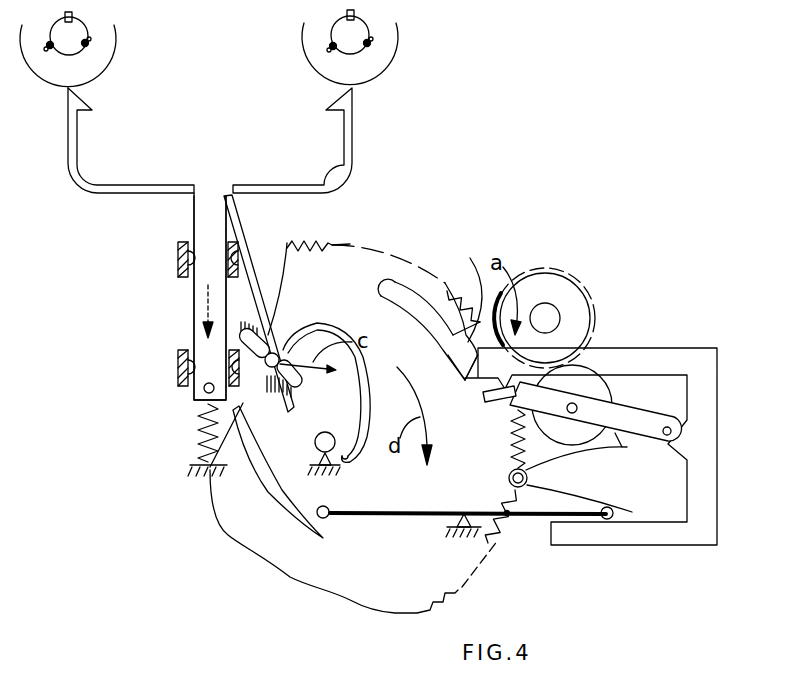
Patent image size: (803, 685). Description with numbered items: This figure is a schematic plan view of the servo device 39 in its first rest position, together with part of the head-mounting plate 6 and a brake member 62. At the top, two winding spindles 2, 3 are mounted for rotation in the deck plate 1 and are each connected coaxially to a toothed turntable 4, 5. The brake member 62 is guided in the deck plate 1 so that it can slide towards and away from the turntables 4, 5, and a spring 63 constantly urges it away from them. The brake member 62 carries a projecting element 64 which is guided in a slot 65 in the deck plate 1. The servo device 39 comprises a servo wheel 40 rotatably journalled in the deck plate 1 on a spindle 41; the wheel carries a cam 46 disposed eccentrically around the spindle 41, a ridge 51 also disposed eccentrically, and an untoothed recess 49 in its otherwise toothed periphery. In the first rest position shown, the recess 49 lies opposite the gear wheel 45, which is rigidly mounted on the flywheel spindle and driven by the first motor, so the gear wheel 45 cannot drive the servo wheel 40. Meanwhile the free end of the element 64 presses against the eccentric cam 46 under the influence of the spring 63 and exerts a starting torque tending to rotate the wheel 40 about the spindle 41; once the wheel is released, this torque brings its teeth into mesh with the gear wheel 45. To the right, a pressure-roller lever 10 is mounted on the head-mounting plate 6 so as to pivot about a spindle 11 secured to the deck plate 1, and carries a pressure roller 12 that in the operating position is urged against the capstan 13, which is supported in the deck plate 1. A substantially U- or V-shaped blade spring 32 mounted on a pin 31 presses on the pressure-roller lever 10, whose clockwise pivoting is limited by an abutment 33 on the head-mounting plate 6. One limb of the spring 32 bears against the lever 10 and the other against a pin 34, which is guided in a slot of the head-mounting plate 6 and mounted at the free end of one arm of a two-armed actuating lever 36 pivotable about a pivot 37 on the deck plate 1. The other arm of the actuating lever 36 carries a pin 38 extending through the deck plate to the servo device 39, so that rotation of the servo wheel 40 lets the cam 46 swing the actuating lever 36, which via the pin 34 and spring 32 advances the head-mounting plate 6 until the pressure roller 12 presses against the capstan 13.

The deck plate 1 is at (183, 242).
The winding spindle 2 is at (72, 47).
The winding spindle 3 is at (355, 50).
The turntable 4 is at (103, 43).
The turntable 5 is at (390, 43).
The head-mounting plate 6 is at (703, 523).
The pressure-roller lever 10 is at (643, 430).
The spindle 11 is at (667, 440).
The pressure roller 12 is at (582, 446).
The capstan 13 is at (553, 310).
The pin 31 is at (509, 478).
The blade spring 32 is at (557, 492).
The abutment 33 is at (488, 385).
The pin 34 is at (607, 520).
The actuating lever 36 is at (398, 517).
The pivot 37 is at (452, 522).
The pin 38 is at (327, 516).
The servo device 39 is at (207, 524).
The servo wheel 40 is at (352, 260).
The spindle 41 is at (317, 443).
The gear wheel 45 is at (553, 288).
The cam 46 is at (363, 395).
The recess 49 is at (459, 290).
The ridge 51 is at (287, 508).
The brake member 62 is at (205, 213).
The spring 63 is at (197, 425).
The projecting element 64 is at (258, 283).
The slot 65 is at (300, 382).